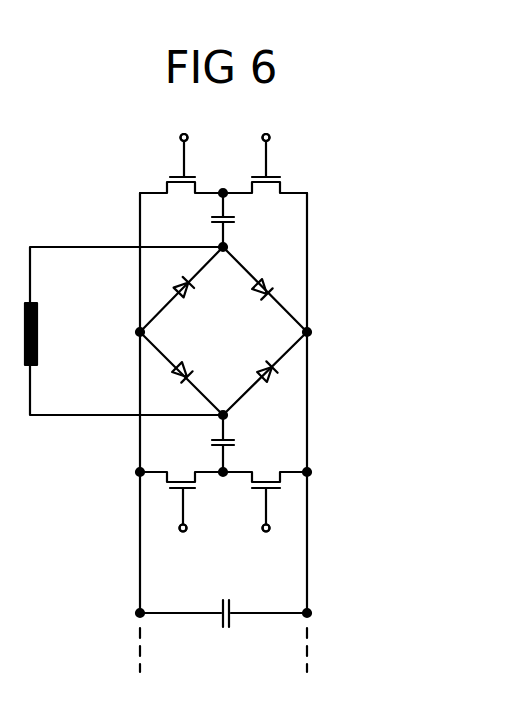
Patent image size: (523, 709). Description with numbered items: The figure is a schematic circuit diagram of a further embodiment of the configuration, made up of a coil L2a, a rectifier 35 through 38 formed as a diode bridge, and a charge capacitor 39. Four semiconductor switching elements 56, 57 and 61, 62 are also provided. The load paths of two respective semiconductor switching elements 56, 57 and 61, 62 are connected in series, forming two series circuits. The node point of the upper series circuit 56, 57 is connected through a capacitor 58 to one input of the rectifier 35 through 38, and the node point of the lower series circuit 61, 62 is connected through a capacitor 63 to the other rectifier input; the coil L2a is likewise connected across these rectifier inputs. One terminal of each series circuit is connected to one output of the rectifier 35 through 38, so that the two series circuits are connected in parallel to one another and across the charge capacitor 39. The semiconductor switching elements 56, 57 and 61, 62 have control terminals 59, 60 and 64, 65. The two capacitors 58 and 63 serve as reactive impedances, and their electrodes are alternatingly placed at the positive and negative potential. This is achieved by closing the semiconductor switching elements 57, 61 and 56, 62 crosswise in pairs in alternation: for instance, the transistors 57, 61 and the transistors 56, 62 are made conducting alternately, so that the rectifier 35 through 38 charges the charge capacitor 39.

The rectifier 35 is at (172, 293).
The rectifier 36 is at (258, 270).
The rectifier 37 is at (167, 373).
The rectifier 38 is at (277, 380).
The charge capacitor 39 is at (223, 635).
The semiconductor switching element 56 is at (168, 170).
The semiconductor switching element 57 is at (277, 169).
The capacitor 58 is at (240, 220).
The control terminal 59 is at (167, 123).
The control terminal 60 is at (283, 123).
The semiconductor switching element 61 is at (202, 482).
The semiconductor switching element 62 is at (243, 482).
The capacitor 63 is at (240, 443).
The control terminal 64 is at (178, 551).
The control terminal 65 is at (264, 551).
The coil L2a is at (124, 331).